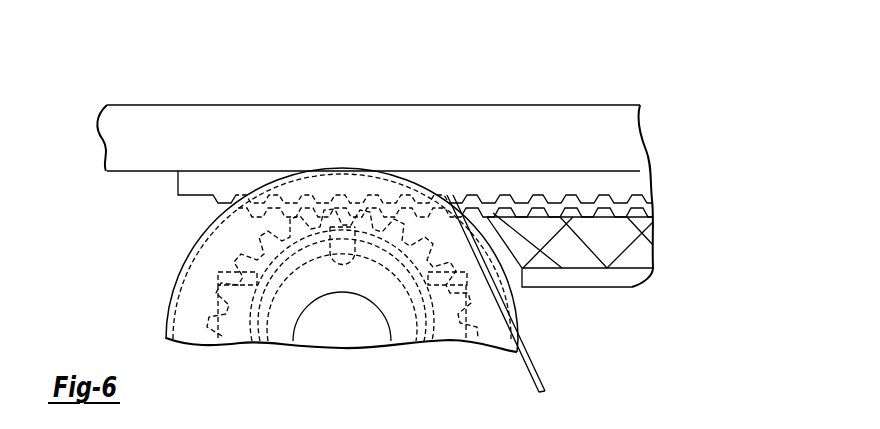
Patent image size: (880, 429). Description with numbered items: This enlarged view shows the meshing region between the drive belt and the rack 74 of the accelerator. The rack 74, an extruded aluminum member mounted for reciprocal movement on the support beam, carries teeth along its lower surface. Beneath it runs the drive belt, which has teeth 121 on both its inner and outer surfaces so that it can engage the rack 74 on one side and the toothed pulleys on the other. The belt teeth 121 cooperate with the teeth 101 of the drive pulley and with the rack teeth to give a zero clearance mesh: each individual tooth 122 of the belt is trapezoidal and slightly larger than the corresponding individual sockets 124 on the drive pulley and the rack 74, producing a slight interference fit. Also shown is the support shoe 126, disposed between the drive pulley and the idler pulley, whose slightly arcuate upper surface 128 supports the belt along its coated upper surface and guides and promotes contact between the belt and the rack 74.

The rack 74 is at (222, 126).
The teeth of the drive pulley 101 is at (472, 313).
The teeth 121 is at (224, 254).
The individual tooth 122 is at (472, 203).
The individual sockets 124 is at (215, 200).
The support shoe 126 is at (643, 248).
The arcuate upper surface 128 is at (573, 213).